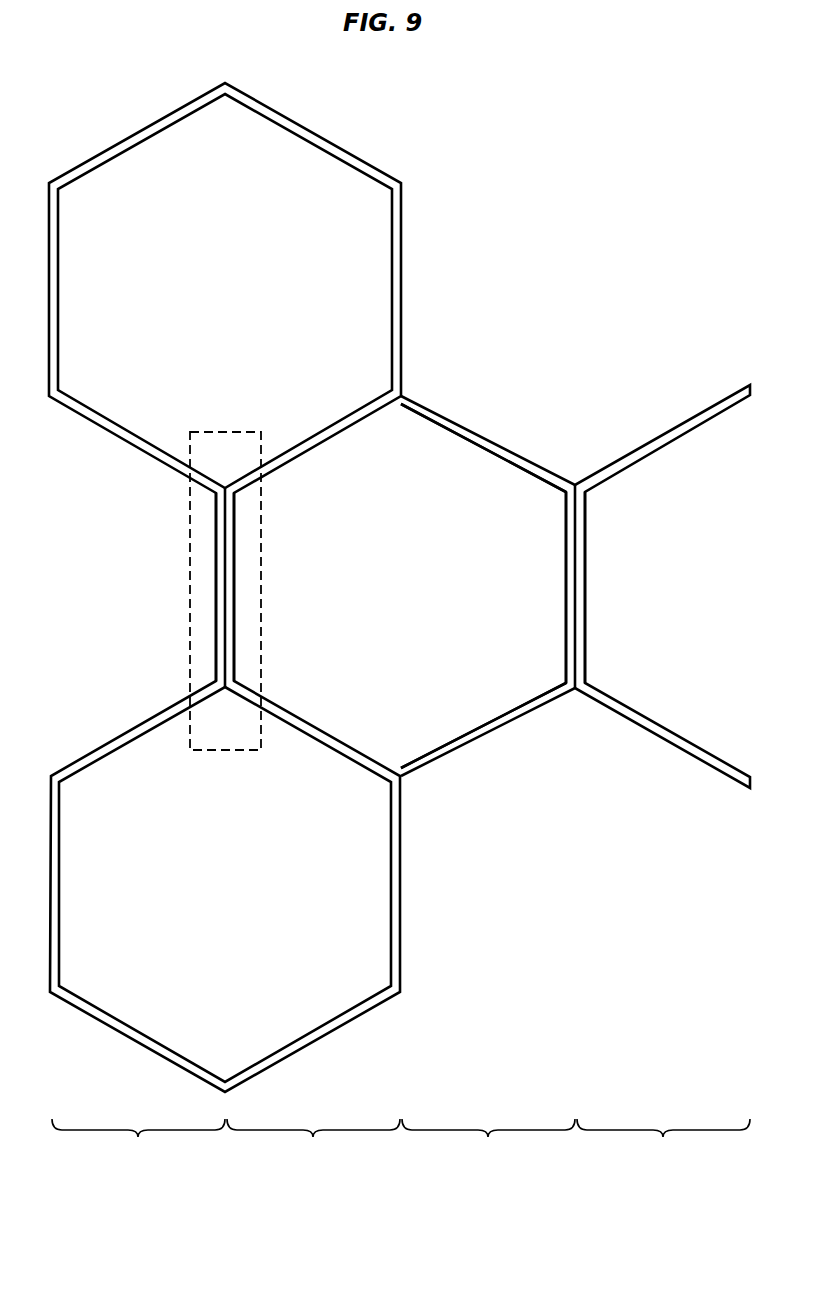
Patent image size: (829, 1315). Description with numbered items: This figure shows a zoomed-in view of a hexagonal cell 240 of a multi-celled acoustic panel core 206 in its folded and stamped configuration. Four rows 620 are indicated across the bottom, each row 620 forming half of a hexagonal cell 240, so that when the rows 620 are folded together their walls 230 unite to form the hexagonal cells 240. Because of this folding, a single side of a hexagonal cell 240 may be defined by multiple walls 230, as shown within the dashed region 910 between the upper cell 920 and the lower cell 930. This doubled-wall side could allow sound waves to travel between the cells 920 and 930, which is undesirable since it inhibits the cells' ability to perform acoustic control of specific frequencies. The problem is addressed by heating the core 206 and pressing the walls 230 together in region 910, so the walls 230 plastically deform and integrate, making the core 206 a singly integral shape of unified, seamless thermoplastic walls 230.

The core 206 is at (619, 264).
The walls 230 is at (305, 121).
The hexagonal cell 240 is at (410, 595).
The region 910 is at (262, 597).
The cell 920 is at (233, 304).
The cell 930 is at (234, 906).
The row 620 is at (401, 1139).